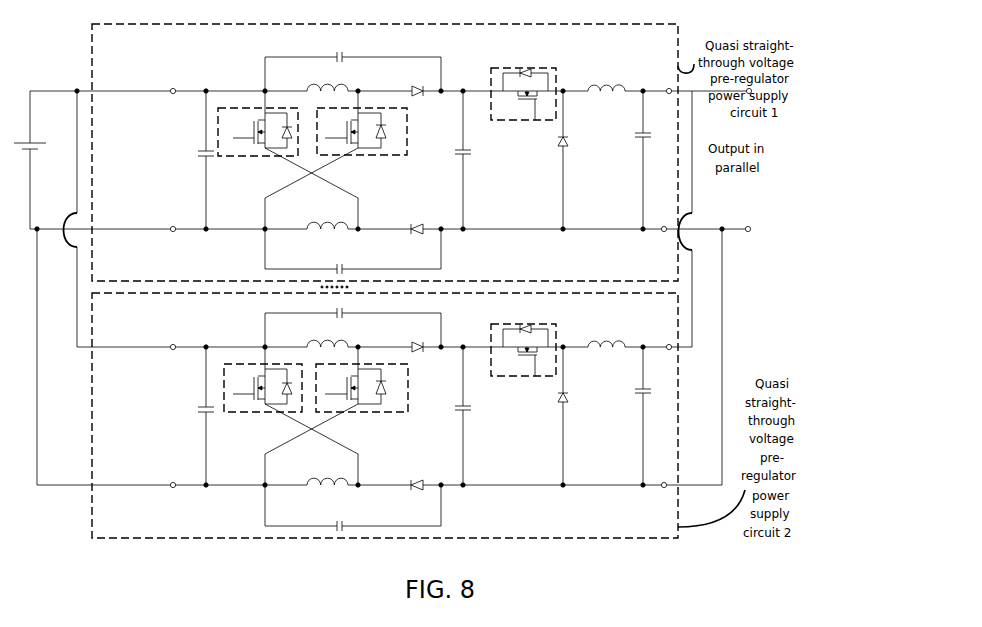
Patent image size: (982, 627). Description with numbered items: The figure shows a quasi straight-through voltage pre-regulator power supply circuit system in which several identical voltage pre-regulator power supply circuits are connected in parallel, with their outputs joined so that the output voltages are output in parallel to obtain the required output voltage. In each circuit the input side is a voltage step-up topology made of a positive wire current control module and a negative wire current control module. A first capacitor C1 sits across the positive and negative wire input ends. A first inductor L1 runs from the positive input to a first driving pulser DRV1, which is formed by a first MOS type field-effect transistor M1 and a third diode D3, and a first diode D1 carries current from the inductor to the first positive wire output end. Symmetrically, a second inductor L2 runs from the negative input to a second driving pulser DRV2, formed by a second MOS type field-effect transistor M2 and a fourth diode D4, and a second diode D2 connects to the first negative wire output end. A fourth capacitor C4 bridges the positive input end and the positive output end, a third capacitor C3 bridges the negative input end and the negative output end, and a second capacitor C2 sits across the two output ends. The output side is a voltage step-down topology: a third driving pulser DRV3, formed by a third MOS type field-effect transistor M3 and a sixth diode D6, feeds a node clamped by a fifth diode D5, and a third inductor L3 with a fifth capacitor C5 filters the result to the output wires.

The first capacitor C1 is at (198, 288).
The second capacitor C2 is at (454, 288).
The third capacitor C3 is at (353, 380).
The fourth capacitor C4 is at (353, 193).
The fifth capacitor C5 is at (634, 288).
The first inductor L1 is at (327, 219).
The second inductor L2 is at (327, 358).
The third inductor L3 is at (606, 219).
The first diode D1 is at (410, 211).
The second diode D2 is at (408, 350).
The third diode D3 is at (389, 255).
The fourth diode D4 is at (280, 254).
The fifth diode D5 is at (551, 288).
The sixth diode D6 is at (525, 208).
The first MOS type field-effect transistor M1 is at (351, 258).
The second MOS type field-effect transistor M2 is at (257, 258).
The third MOS type field-effect transistor M3 is at (523, 233).
The first driving pulser DRV1 is at (362, 267).
The second driving pulser DRV2 is at (260, 267).
The third driving pulser DRV3 is at (523, 214).